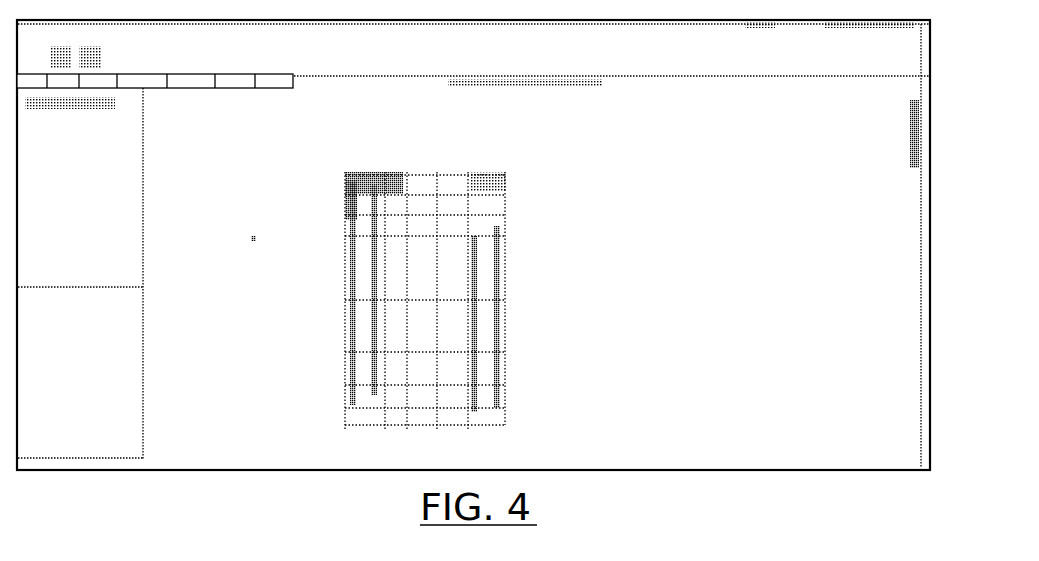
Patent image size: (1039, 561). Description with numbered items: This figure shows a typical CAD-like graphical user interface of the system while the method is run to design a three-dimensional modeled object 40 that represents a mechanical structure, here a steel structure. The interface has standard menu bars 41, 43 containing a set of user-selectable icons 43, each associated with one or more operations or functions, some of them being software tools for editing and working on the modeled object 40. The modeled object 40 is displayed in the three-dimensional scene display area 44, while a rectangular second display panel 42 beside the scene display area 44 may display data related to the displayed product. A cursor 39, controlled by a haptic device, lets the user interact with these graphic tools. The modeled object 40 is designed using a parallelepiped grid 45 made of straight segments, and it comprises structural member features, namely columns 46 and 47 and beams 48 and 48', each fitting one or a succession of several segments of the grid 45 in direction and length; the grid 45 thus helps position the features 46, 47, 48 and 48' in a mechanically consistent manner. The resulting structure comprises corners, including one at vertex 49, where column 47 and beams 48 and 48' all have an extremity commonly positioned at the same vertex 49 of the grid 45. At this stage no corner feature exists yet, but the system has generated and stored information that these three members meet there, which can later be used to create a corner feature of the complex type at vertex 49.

The cursor 39 is at (243, 238).
The 3D modeled object 40 is at (218, 167).
The menu bar 41 is at (231, 83).
The second display panel 42 is at (104, 220).
The user-selectable icons 43 is at (68, 103).
The 3D scene display area 44 is at (714, 226).
The parallelepiped grid 45 is at (498, 188).
The column 46 is at (476, 345).
The column 47 is at (349, 312).
The beam 48 is at (417, 258).
The beam 48' is at (445, 258).
The vertex 49 is at (349, 187).